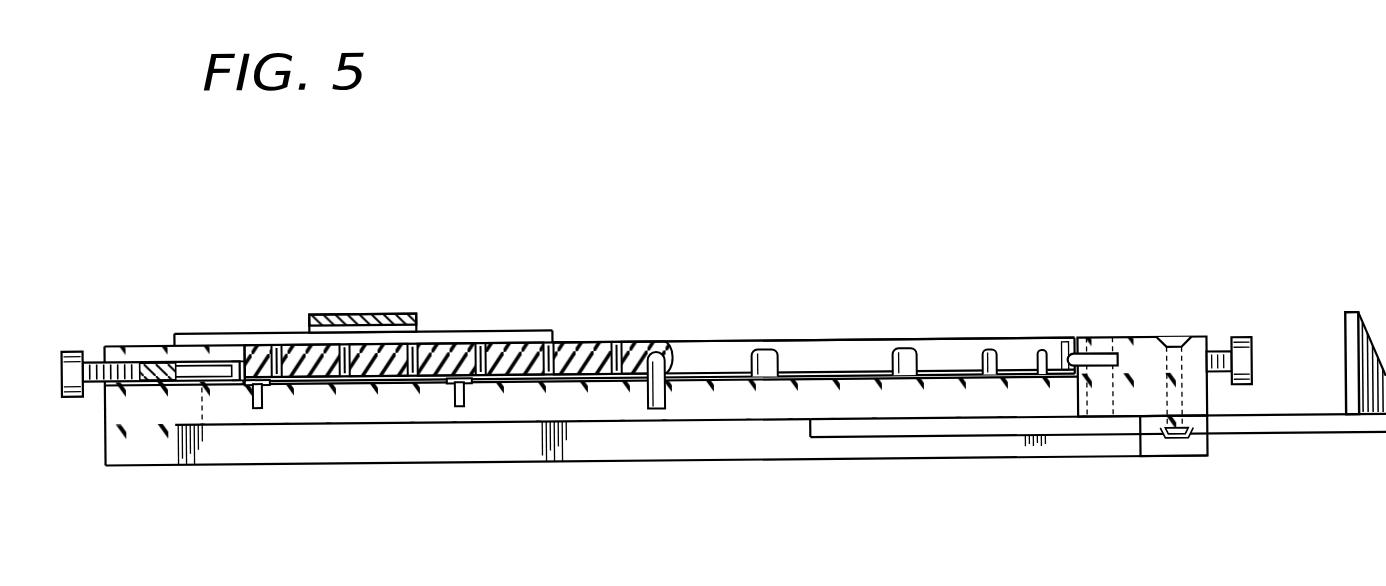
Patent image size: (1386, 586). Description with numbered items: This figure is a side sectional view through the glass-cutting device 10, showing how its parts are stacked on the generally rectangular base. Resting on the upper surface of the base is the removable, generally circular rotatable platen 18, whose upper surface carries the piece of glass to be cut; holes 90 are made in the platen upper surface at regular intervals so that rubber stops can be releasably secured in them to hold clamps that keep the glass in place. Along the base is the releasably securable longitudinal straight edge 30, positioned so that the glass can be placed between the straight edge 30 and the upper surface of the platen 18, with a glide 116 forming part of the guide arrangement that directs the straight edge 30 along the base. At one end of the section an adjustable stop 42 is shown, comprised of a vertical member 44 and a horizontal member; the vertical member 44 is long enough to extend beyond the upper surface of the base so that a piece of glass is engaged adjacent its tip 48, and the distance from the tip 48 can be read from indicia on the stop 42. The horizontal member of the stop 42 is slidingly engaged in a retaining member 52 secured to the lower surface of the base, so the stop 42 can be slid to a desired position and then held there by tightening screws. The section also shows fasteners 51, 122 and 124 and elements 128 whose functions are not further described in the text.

The device 10 is at (1200, 331).
The rotatable platen 18 is at (1066, 346).
The longitudinal straight edge 30 is at (393, 313).
The adjustable stop 42 is at (1266, 433).
The vertical member 44 is at (1367, 328).
The tip 48 is at (1346, 336).
The fastening screw 51 is at (1177, 455).
The retaining member 52 is at (1158, 449).
The holes 90 is at (553, 352).
The glide 116 is at (460, 405).
The locking bolt 122 is at (1092, 364).
The adjustment screw 124 is at (198, 356).
The locating pins 128 is at (767, 354).